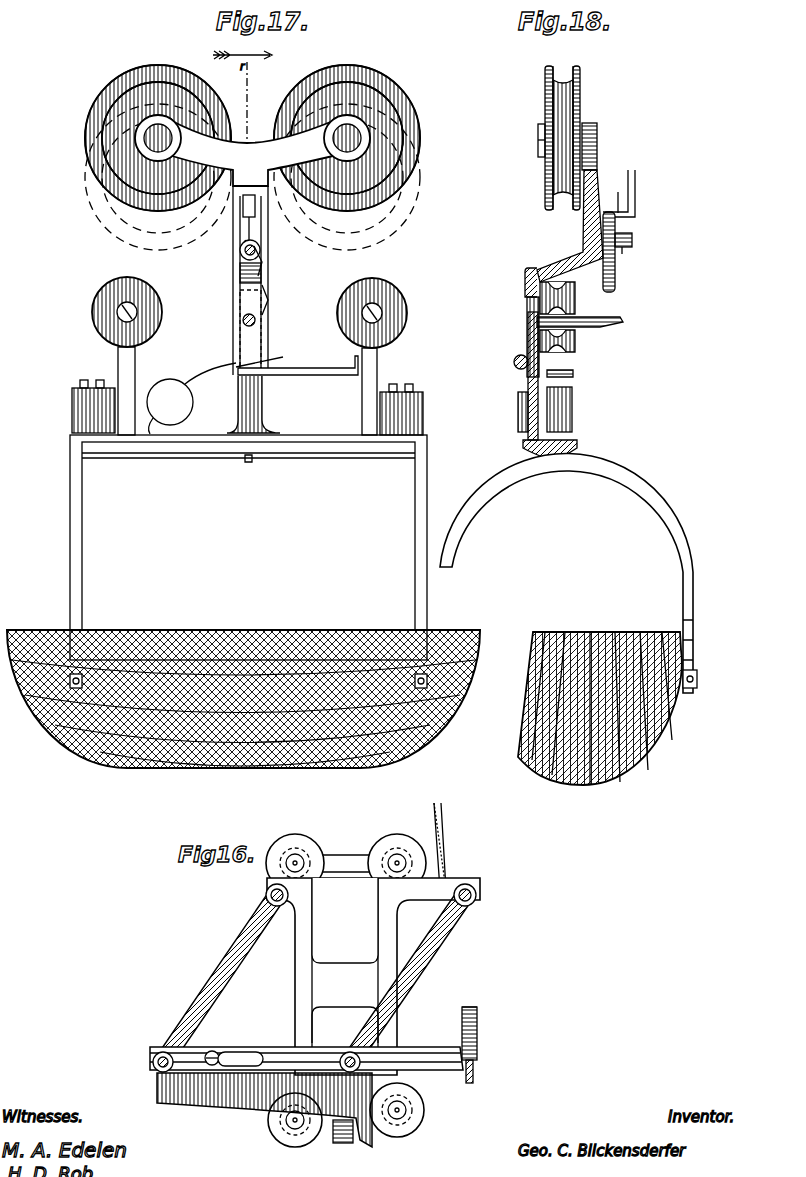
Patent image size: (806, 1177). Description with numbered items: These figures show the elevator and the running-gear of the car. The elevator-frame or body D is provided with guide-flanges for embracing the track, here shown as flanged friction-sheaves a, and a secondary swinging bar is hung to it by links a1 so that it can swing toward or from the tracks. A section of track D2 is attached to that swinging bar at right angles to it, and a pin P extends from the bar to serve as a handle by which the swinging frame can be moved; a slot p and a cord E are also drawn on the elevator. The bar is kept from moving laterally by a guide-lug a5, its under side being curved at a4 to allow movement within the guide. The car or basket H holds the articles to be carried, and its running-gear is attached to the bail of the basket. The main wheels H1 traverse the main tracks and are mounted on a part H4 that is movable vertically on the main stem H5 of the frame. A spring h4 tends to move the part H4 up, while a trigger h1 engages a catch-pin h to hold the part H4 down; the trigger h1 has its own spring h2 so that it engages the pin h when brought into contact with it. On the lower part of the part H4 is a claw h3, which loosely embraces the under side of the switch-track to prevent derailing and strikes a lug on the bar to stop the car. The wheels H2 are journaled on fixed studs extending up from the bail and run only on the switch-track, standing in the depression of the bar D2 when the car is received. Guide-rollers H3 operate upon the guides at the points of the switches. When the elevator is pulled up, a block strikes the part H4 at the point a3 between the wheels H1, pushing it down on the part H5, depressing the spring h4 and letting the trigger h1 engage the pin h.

In FIG. 17, the car or basket H is at (414, 597).
In FIG. 18, the car or basket H is at (652, 632).
In FIG. 17, the main wheels H1 is at (178, 70).
In FIG. 18, the main wheels H1 is at (547, 87).
In FIG. 17, the switch-track wheels H2 is at (160, 305).
In FIG. 18, the switch-track wheels H2 is at (557, 317).
In FIG. 17, the guide-rollers H3 is at (72, 401).
In FIG. 18, the guide-rollers H3 is at (573, 410).
In FIG. 17, the movable part H4 is at (272, 158).
In FIG. 18, the movable part H4 is at (592, 224).
In FIG. 17, the main stem of the frame H5 is at (263, 408).
In FIG. 18, the main stem of the frame H5 is at (530, 433).
In FIG. 17, the catch-pin h is at (244, 227).
In FIG. 18, the catch-pin h is at (623, 321).
In FIG. 17, the trigger h1 is at (262, 270).
In FIG. 18, the trigger h1 is at (635, 198).
In FIG. 17, the trigger spring h2 is at (244, 252).
In FIG. 18, the trigger spring h2 is at (632, 231).
In FIG. 17, the claw h3 is at (333, 375).
In FIG. 18, the claw h3 is at (572, 372).
In FIG. 17, the spring h4 is at (195, 401).
In FIG. 17, the contact point a3 is at (258, 142).
In FIG. 18, the contact point a3 is at (596, 127).
In FIG. 16, the contact point a3 is at (477, 1010).
In FIG. 16, the carriage wheels a is at (312, 848).
In FIG. 16, the diagonal arms a1 is at (425, 975).
In FIG. 16, the lower plate a4 is at (250, 1098).
In FIG. 16, the block a5 is at (340, 1143).
In FIG. 16, the elevator-frame or body D is at (290, 1034).
In FIG. 16, the section of track D2 is at (478, 1040).
In FIG. 16, the pin P is at (220, 1052).
In FIG. 16, the slot p is at (240, 1058).
In FIG. 16, the cord E is at (446, 855).